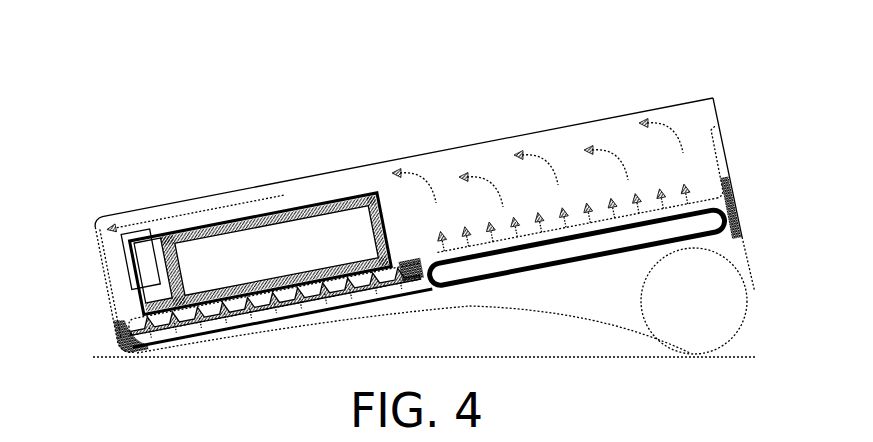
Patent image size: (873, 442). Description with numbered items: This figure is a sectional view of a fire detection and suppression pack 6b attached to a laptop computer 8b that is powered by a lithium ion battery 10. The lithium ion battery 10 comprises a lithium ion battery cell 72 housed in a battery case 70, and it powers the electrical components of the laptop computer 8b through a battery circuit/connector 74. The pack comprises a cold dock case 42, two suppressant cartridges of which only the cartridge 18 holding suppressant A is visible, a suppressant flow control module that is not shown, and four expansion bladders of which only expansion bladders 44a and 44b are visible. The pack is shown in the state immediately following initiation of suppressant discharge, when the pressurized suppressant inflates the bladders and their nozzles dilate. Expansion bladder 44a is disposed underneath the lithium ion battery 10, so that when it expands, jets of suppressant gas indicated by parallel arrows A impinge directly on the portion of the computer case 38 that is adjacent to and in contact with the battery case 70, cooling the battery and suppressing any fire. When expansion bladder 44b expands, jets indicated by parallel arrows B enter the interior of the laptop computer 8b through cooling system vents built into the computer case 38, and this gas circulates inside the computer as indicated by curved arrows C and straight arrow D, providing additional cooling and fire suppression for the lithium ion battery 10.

The laptop computer 8b is at (641, 111).
The fire detection and suppression pack 6b is at (748, 238).
The computer case 38 is at (408, 158).
The lithium ion battery 10 is at (324, 202).
The battery case 70 is at (247, 216).
The lithium ion battery cell 72 is at (308, 213).
The battery circuit/connector 74 is at (125, 259).
The expansion bladder 44a is at (133, 343).
The expansion bladder 44b is at (593, 260).
The cold dock case 42 is at (529, 312).
The cartridge 18 is at (740, 305).
The parallel arrows A is at (243, 315).
The parallel arrows B is at (688, 189).
The curved arrows C is at (543, 161).
The straight arrow D is at (195, 213).